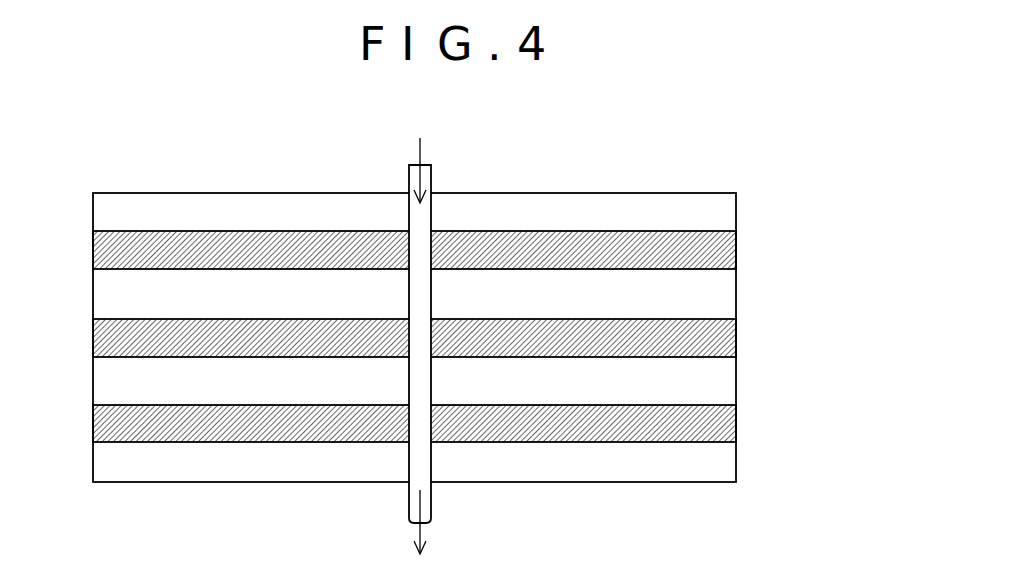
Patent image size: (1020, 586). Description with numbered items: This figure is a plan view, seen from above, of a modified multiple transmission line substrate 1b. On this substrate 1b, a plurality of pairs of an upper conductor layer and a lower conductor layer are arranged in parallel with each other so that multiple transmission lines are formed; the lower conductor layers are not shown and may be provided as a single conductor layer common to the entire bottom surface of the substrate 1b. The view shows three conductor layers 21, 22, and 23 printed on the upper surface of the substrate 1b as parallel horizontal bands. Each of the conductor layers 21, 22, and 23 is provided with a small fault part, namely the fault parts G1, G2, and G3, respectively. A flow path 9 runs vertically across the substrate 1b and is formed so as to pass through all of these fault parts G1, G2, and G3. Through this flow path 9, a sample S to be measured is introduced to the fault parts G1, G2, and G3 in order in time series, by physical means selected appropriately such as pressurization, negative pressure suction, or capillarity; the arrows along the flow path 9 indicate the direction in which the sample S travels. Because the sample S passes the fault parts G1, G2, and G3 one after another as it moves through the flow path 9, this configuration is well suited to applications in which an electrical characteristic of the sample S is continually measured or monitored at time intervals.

The multiple transmission line substrate 1b is at (617, 215).
The flow path 9 is at (415, 213).
The conductor layer 21 is at (728, 251).
The conductor layer 22 is at (728, 334).
The conductor layer 23 is at (728, 421).
The sample S is at (419, 333).
The fault part G1 is at (420, 252).
The fault part G2 is at (420, 338).
The fault part G3 is at (420, 425).